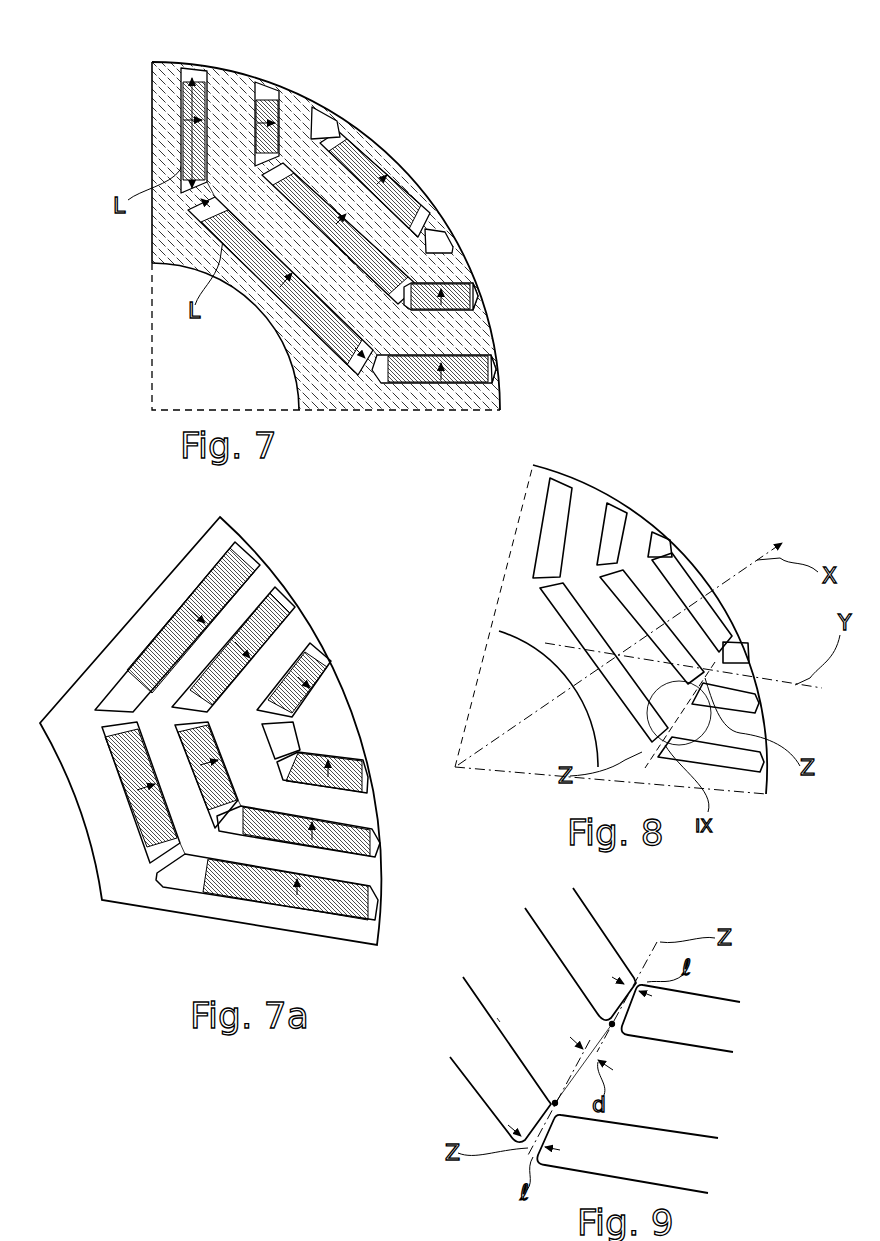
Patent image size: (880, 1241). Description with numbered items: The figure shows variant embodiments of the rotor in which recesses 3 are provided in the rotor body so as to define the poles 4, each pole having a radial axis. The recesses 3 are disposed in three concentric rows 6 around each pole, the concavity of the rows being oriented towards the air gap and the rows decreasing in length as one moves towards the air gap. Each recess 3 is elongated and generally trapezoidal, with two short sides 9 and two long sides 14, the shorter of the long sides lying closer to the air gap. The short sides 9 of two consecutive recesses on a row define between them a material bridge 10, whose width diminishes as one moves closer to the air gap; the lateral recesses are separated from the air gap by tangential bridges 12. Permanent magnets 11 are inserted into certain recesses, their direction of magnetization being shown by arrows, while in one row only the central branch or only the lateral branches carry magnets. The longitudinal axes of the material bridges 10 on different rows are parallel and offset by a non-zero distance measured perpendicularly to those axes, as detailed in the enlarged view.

In FIG. 7, the recess 3 is at (290, 90).
In FIG. 7a, the recess 3 is at (277, 590).
In FIG. 8, the recess 3 is at (560, 493).
In FIG. 9, the recess 3 is at (587, 925).
In FIG. 7a, the pole 4 is at (333, 723).
In FIG. 8, the pole 4 is at (703, 578).
In FIG. 7, the row 6 is at (197, 71).
In FIG. 7a, the row 6 is at (255, 542).
In FIG. 9, the short side 9 is at (619, 981).
In FIG. 7, the material bridge 10 is at (402, 302).
In FIG. 7a, the material bridge 10 is at (157, 870).
In FIG. 9, the material bridge 10 is at (622, 1002).
In FIG. 7, the permanent magnet 11 is at (185, 132).
In FIG. 7a, the permanent magnet 11 is at (212, 572).
In FIG. 7, the tangential bridge 12 is at (455, 236).
In FIG. 7a, the tangential bridge 12 is at (330, 652).
In FIG. 9, the long side 14 is at (497, 1018).